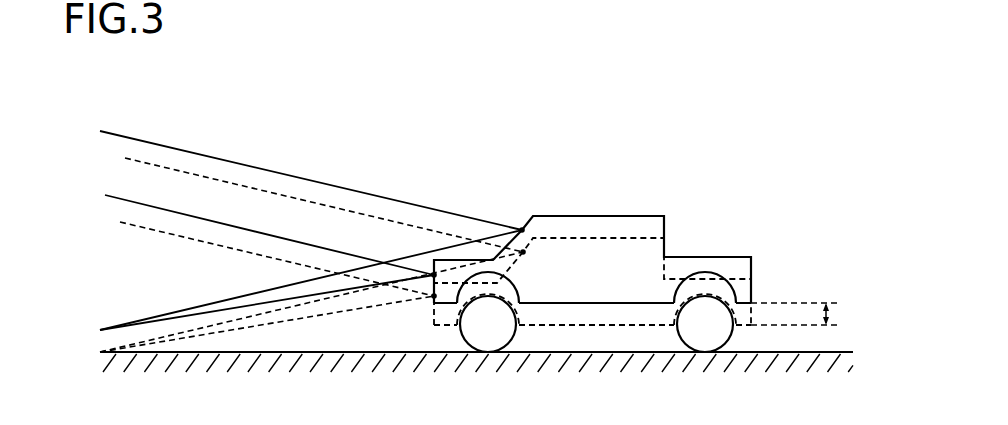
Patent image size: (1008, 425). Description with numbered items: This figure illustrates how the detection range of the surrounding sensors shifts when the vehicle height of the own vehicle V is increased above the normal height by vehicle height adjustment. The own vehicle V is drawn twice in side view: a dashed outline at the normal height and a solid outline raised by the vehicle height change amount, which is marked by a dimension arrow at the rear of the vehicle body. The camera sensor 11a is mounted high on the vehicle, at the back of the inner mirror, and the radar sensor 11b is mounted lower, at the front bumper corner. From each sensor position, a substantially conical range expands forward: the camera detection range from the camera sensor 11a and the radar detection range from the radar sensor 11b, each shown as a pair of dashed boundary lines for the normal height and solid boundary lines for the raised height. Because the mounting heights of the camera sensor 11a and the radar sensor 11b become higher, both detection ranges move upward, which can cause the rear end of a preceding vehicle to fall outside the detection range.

The own vehicle V is at (636, 230).
The camera sensor 11a is at (523, 252).
The radar sensor 11b is at (434, 296).